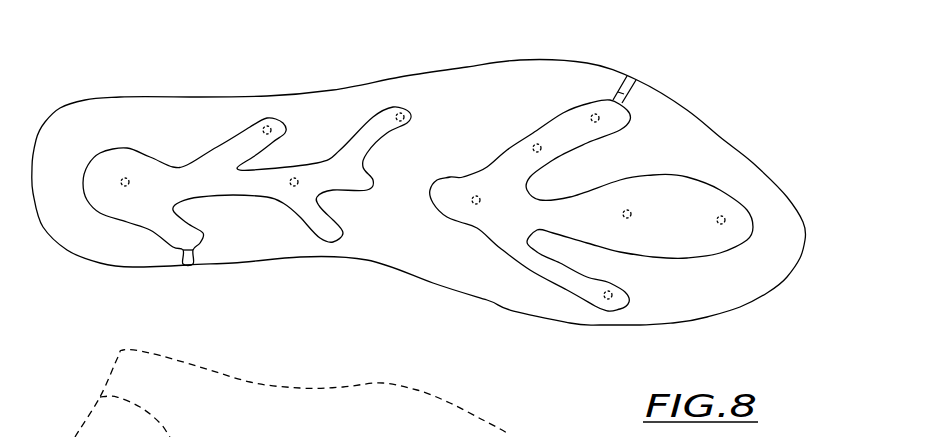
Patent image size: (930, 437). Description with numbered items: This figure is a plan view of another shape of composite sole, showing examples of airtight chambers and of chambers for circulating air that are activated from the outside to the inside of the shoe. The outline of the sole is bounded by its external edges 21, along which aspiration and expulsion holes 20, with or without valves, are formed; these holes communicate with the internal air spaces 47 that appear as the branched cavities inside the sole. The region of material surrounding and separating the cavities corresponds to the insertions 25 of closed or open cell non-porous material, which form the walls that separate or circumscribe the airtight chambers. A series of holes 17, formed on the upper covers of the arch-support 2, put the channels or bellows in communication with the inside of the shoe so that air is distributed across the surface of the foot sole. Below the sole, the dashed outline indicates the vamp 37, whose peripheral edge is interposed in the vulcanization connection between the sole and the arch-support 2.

The arch-support 2 is at (514, 436).
The holes 17 is at (533, 142).
The aspiration and expulsion holes 20 is at (628, 90).
The external edges 21 is at (324, 82).
The insertions 25 is at (458, 88).
The vamp 37 is at (340, 385).
The internal air spaces 47 is at (192, 178).